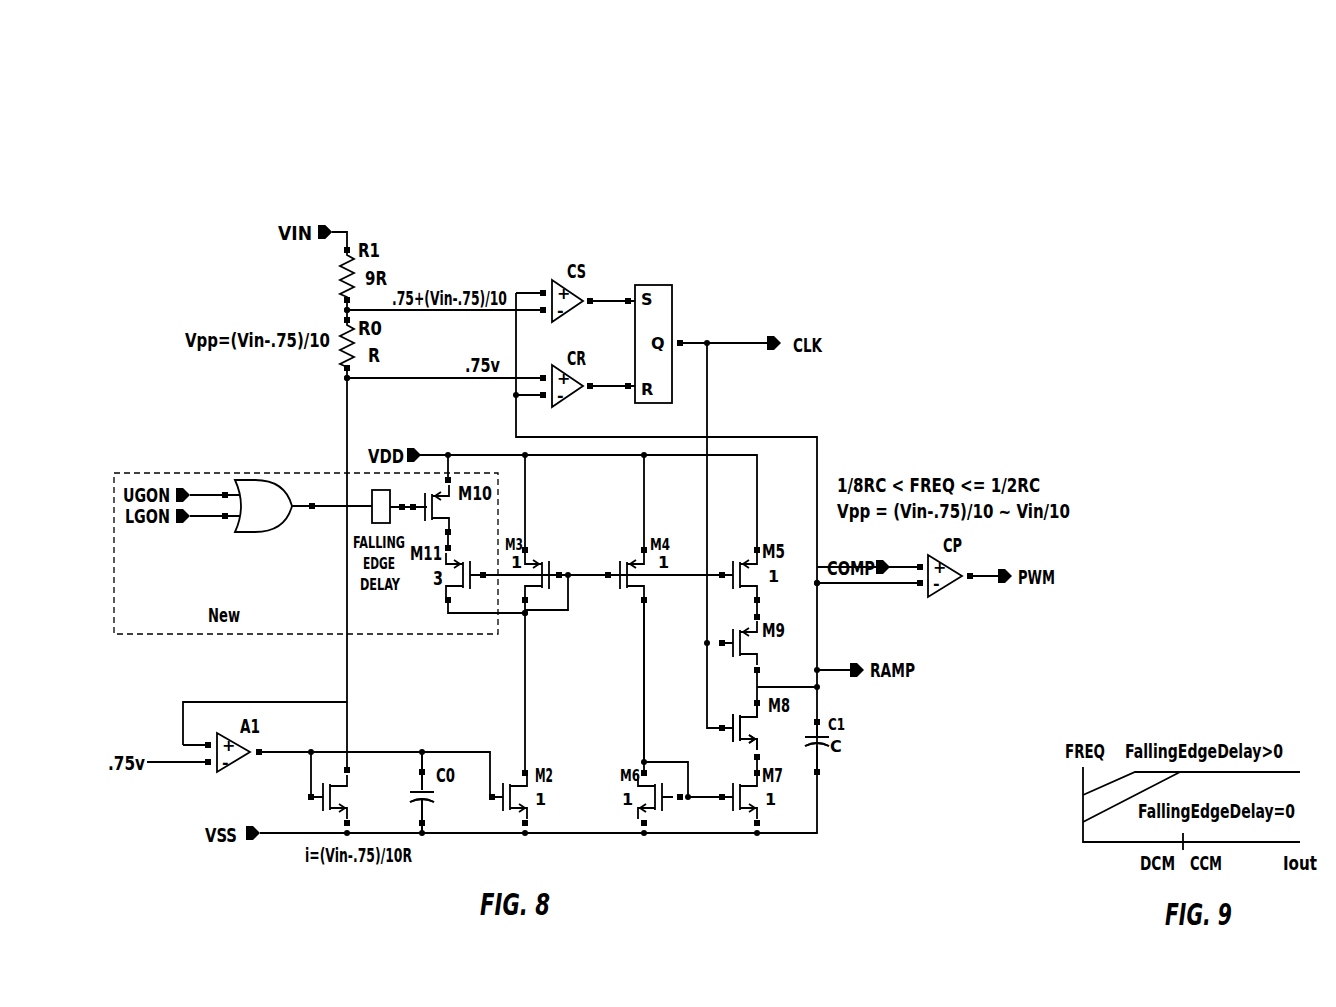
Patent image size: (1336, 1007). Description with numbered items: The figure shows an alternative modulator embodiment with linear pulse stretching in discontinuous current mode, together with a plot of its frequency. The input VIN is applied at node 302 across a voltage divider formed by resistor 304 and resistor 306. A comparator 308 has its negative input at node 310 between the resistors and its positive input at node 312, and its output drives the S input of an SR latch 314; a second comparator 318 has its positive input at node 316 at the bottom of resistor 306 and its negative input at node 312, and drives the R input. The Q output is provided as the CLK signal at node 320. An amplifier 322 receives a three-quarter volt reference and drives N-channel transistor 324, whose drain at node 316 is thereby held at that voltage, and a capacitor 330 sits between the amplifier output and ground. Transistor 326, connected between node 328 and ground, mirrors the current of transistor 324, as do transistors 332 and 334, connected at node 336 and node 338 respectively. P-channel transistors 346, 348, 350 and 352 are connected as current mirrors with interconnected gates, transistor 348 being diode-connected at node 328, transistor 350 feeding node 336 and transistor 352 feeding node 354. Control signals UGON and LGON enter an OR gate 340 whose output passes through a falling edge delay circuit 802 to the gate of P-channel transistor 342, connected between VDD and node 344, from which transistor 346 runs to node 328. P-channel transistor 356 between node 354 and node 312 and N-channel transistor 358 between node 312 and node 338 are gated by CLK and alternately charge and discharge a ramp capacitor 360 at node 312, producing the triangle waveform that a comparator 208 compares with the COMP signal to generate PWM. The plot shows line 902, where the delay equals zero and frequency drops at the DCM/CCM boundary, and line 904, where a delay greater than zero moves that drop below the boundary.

In FIG. 8, the node 302 is at (320, 225).
In FIG. 8, the resistor 304 is at (342, 285).
In FIG. 8, the resistor 306 is at (342, 348).
In FIG. 8, the node 310 is at (345, 310).
In FIG. 8, the node 316 is at (345, 378).
In FIG. 8, the comparator 308 is at (580, 295).
In FIG. 8, the comparator 318 is at (565, 400).
In FIG. 8, the SR latch 314 is at (668, 297).
In FIG. 8, the node 320 is at (707, 340).
In FIG. 8, the P-channel transistor 342 is at (425, 500).
In FIG. 8, the node 344 is at (452, 548).
In FIG. 8, the P-channel transistor 346 is at (455, 590).
In FIG. 8, the OR gate 340 is at (262, 535).
In FIG. 8, the falling edge delay circuit 802 is at (372, 512).
In FIG. 8, the P-channel transistor 348 is at (547, 560).
In FIG. 8, the P-channel transistor 350 is at (620, 565).
In FIG. 8, the P-channel transistor 352 is at (752, 585).
In FIG. 8, the node 354 is at (760, 608).
In FIG. 8, the P-channel transistor 356 is at (752, 650).
In FIG. 8, the node 328 is at (528, 613).
In FIG. 8, the node 312 is at (817, 588).
In FIG. 8, the comparator 208 is at (950, 595).
In FIG. 8, the N-channel transistor 358 is at (752, 730).
In FIG. 8, the node 338 is at (754, 770).
In FIG. 8, the capacitor 360 is at (850, 745).
In FIG. 8, the N-channel transistor 334 is at (775, 803).
In FIG. 8, the node 336 is at (644, 705).
In FIG. 8, the N-channel transistor 332 is at (650, 795).
In FIG. 8, the N-channel transistor 326 is at (520, 834).
In FIG. 8, the capacitor 330 is at (415, 792).
In FIG. 8, the N-channel transistor 324 is at (325, 797).
In FIG. 8, the amplifier 322 is at (245, 765).
In FIG. 9, the line 904 is at (1090, 790).
In FIG. 9, the line 902 is at (1090, 812).